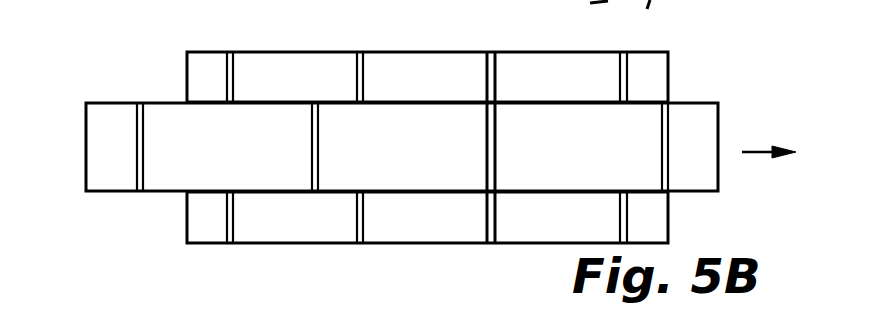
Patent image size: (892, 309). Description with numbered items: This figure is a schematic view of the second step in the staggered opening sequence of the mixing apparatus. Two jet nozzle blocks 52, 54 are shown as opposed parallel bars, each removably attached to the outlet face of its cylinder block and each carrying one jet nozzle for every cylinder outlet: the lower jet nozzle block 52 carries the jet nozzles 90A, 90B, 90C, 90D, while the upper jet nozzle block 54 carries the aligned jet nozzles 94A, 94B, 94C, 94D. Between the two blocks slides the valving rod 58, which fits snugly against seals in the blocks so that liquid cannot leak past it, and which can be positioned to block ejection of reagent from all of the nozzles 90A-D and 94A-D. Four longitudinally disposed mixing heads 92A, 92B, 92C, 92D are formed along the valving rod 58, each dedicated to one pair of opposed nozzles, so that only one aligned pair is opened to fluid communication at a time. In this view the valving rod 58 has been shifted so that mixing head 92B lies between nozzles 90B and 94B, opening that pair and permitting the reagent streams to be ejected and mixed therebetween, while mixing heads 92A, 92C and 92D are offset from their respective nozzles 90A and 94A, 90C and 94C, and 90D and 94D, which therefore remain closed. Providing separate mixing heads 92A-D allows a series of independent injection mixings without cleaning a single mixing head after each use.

The jet nozzle block 52 is at (585, 222).
The jet nozzle block 54 is at (590, 85).
The valving rod 58 is at (582, 148).
The jet nozzle 90A is at (628, 213).
The jet nozzle 90B is at (488, 218).
The jet nozzle 90C is at (357, 222).
The jet nozzle 90D is at (234, 222).
The mixing head 92A is at (668, 130).
The mixing head 92B is at (487, 172).
The mixing head 92C is at (318, 134).
The mixing head 92D is at (143, 138).
The jet nozzle 94A is at (628, 75).
The jet nozzle 94B is at (522, 30).
The jet nozzle 94C is at (400, 30).
The jet nozzle 94D is at (256, 33).